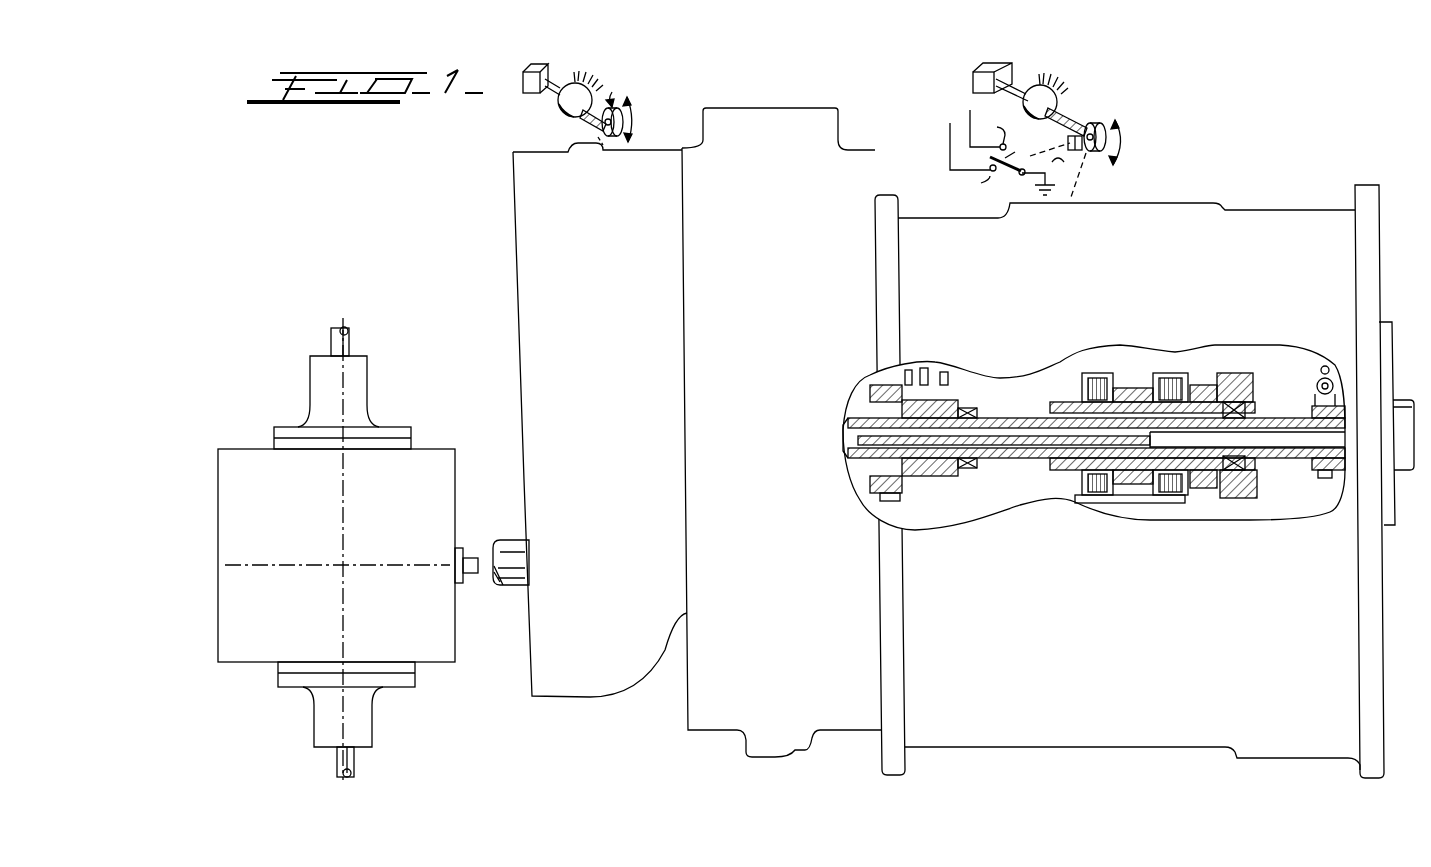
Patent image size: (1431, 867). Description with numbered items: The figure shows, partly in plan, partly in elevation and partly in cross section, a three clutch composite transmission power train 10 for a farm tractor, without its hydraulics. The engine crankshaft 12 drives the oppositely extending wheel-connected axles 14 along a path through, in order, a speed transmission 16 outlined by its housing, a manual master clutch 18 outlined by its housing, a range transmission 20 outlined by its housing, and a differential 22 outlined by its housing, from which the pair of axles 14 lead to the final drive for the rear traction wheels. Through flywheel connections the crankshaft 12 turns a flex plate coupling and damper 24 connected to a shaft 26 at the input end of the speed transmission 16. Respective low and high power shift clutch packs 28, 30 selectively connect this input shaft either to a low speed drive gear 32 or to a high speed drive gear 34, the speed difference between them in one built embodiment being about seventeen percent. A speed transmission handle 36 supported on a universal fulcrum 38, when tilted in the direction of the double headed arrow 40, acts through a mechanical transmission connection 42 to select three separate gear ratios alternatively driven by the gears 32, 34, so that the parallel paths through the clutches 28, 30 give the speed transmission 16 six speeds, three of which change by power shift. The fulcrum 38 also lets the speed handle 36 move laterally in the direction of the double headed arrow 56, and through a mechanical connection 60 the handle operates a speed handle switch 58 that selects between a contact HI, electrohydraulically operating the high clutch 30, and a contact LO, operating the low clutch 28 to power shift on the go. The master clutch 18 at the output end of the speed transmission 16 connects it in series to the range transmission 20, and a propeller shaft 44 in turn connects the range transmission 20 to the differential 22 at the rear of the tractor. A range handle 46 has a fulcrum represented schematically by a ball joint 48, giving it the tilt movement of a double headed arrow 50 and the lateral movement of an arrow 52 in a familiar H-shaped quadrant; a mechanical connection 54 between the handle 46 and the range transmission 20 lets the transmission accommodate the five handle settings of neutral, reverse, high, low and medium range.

The power train 10 is at (1397, 334).
The crankshaft 12 is at (1395, 400).
The axles 14 is at (350, 340).
The speed transmission 16 is at (1165, 203).
The manual master clutch 18 is at (748, 108).
The range transmission 20 is at (642, 150).
The differential 22 is at (425, 452).
The flex plate coupling and damper 24 is at (1328, 365).
The shaft 26 is at (1272, 425).
The low power shift clutch pack 28 is at (1186, 378).
The high power shift clutch pack 30 is at (1100, 375).
The low speed drive gear 32 is at (1205, 500).
The high speed drive gear 34 is at (1058, 500).
The speed transmission handle 36 is at (975, 72).
The universal fulcrum 38 is at (1058, 82).
The double headed arrow 40 is at (1122, 125).
The mechanical transmission connection 42 is at (1077, 190).
The propeller shaft 44 is at (476, 566).
The range handle 46 is at (540, 72).
The schematic ball joint 48 is at (600, 83).
The double headed arrow 50 is at (631, 120).
The arrow 52 is at (616, 99).
The mechanical connection 54 is at (600, 137).
The double headed arrow 56 is at (1086, 121).
The speed handle switch 58 is at (992, 178).
The mechanical connection 60 is at (1051, 176).